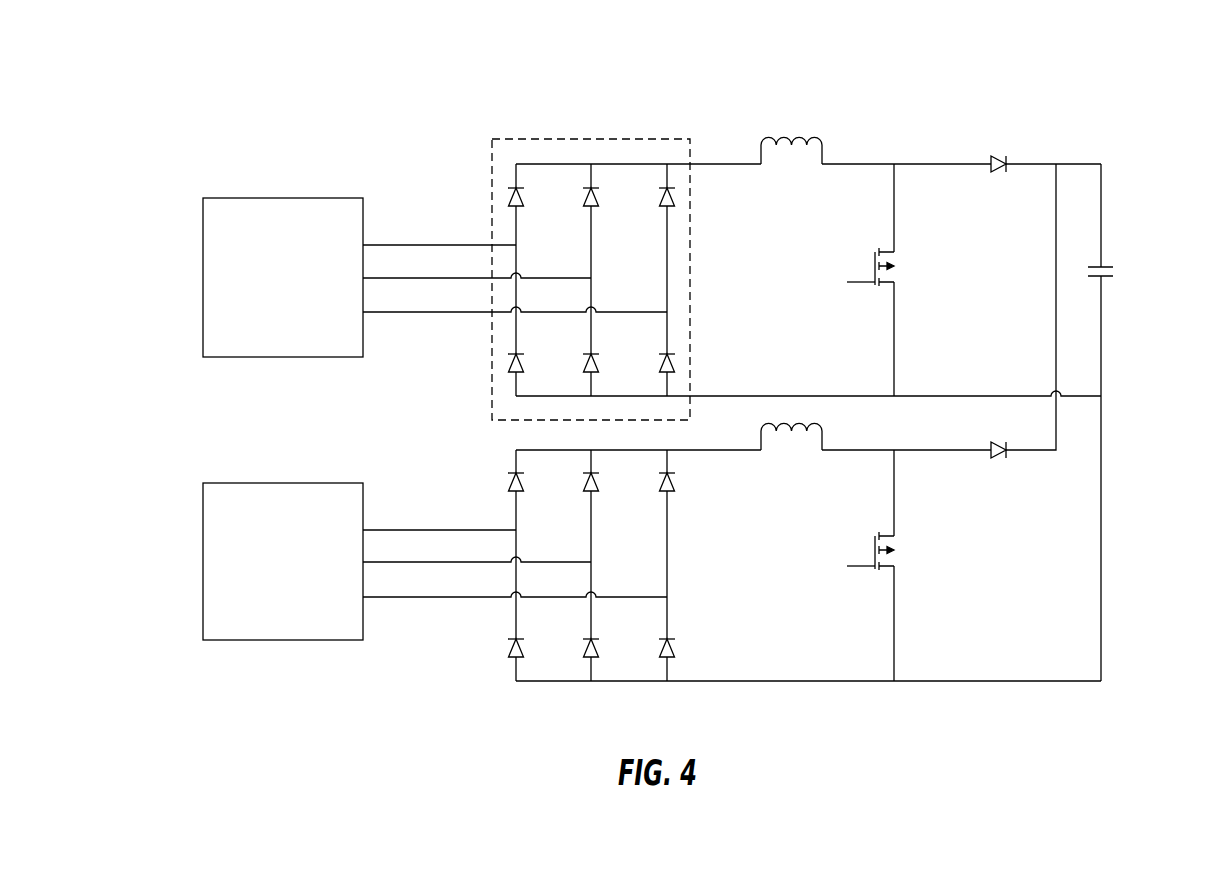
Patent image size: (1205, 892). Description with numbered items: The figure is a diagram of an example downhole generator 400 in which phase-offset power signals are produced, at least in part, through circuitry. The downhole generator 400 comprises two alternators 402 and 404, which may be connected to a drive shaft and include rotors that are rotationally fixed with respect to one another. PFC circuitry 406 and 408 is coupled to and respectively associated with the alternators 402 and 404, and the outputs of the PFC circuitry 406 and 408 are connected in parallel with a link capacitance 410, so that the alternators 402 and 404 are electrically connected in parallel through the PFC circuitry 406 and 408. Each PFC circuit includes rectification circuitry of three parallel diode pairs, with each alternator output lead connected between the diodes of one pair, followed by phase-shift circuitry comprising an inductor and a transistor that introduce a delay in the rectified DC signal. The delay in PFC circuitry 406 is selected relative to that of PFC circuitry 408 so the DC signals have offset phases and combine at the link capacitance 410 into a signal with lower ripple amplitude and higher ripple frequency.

The downhole generator 400 is at (1106, 86).
The alternator 402 is at (283, 197).
The alternator 404 is at (283, 482).
The PFC circuitry 406 is at (916, 144).
The PFC circuitry 408 is at (916, 705).
The link capacitance 410 is at (1105, 264).